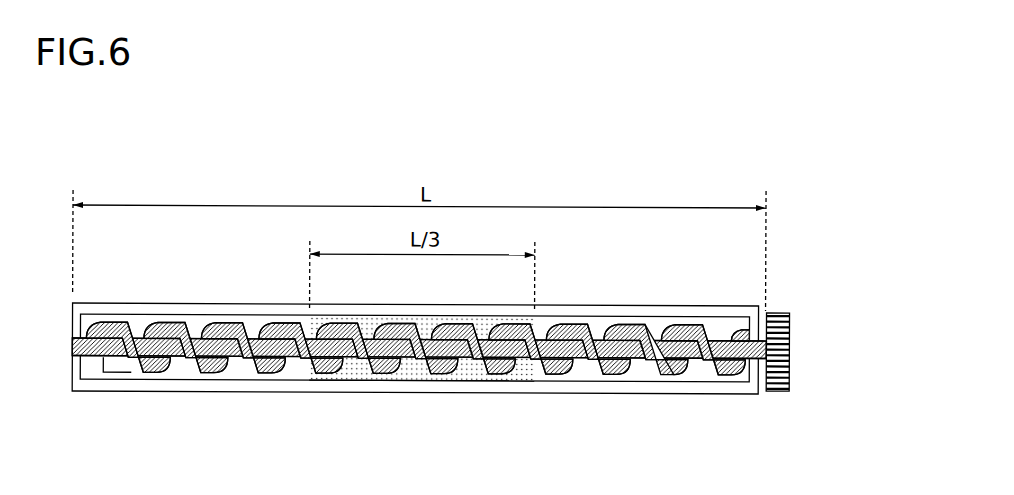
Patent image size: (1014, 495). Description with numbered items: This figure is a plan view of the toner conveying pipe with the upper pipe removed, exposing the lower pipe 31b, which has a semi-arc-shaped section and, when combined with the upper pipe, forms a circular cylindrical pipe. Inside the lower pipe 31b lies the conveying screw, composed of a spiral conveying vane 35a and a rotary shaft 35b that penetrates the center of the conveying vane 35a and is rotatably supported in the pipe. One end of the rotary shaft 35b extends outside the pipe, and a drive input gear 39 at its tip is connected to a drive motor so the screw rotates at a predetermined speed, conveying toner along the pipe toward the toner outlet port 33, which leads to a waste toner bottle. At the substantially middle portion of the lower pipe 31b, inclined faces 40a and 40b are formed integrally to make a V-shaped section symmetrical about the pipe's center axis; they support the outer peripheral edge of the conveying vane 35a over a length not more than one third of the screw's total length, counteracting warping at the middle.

The lower pipe 31b is at (667, 398).
The toner outlet port 33 is at (113, 377).
The conveying vane 35a is at (211, 376).
The rotary shaft 35b is at (237, 358).
The drive input gear 39 is at (786, 302).
The inclined face 40a is at (430, 322).
The inclined face 40b is at (407, 380).